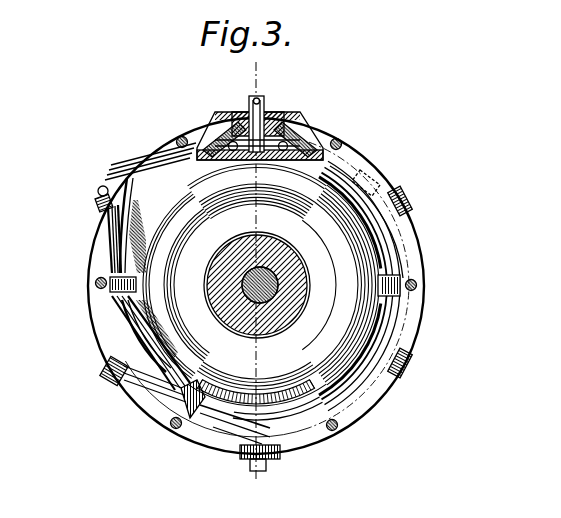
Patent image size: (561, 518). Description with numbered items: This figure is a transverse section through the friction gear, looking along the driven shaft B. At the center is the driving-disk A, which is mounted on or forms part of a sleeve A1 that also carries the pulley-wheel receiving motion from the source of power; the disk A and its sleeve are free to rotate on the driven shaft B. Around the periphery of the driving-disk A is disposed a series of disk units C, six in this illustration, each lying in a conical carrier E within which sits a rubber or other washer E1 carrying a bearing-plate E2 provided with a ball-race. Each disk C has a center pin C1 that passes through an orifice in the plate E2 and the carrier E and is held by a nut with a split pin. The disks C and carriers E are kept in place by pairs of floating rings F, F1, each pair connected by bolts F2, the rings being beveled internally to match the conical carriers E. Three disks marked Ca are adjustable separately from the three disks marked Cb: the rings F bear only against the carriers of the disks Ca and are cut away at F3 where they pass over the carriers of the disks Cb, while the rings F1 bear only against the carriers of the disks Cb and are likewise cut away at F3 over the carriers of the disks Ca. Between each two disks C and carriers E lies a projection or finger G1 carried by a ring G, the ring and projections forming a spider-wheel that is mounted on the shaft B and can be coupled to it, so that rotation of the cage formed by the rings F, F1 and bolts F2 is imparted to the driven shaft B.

The driving-disk A is at (250, 305).
The sleeve A1 is at (205, 333).
The driven shaft B is at (197, 400).
The disk unit C is at (278, 126).
The center pin C1 is at (263, 100).
The disks adjustable as a first group Ca is at (313, 139).
The disks adjustable as a second group Cb is at (288, 472).
The conical carrier E is at (218, 146).
The washer E1 is at (212, 138).
The bearing-plate E2 is at (240, 135).
The floating ring F is at (118, 250).
The floating ring F1 is at (408, 257).
The bolt F2 is at (417, 285).
The cut-away portion F3 is at (402, 201).
The ring G is at (120, 284).
The projection G1 is at (198, 158).